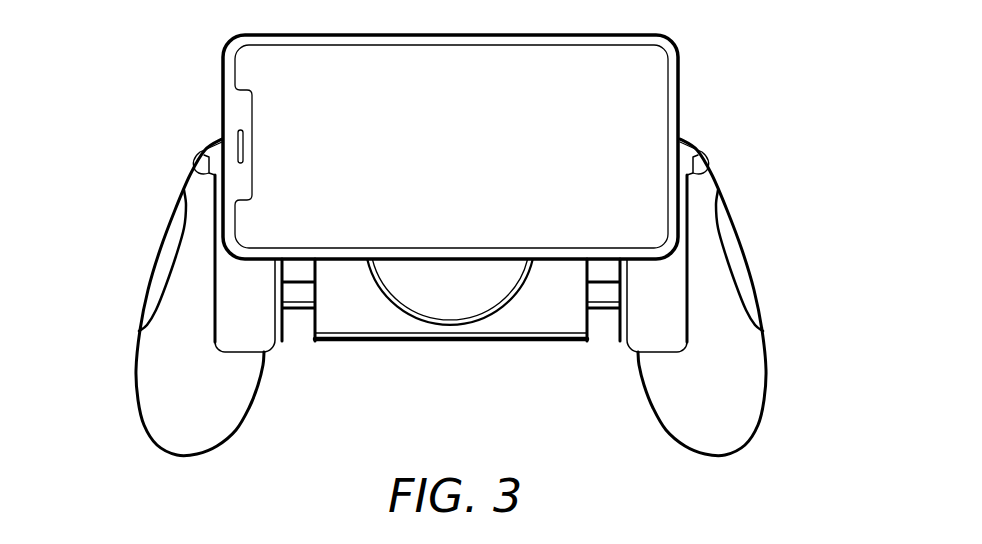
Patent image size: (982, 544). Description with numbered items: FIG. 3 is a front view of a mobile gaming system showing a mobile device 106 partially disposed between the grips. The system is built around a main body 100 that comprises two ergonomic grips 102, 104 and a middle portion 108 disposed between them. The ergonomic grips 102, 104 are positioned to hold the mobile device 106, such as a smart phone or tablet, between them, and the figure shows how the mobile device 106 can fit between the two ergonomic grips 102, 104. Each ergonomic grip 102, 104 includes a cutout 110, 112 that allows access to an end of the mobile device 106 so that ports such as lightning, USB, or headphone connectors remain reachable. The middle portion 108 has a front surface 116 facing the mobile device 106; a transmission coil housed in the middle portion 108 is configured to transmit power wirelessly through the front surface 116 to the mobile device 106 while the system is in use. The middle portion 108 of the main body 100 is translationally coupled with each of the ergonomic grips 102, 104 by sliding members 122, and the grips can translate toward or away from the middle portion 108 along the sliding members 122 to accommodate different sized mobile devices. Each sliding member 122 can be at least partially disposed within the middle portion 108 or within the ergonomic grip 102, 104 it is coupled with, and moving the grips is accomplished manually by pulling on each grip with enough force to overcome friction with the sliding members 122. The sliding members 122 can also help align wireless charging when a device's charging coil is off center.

The main body 100 is at (152, 60).
The ergonomic grip 102 is at (147, 402).
The ergonomic grip 104 is at (753, 388).
The mobile device 106 is at (700, 60).
The middle portion 108 is at (452, 350).
The cutout 110 is at (165, 246).
The cutout 112 is at (733, 233).
The front surface 116 is at (366, 314).
The sliding members 122 is at (296, 295).